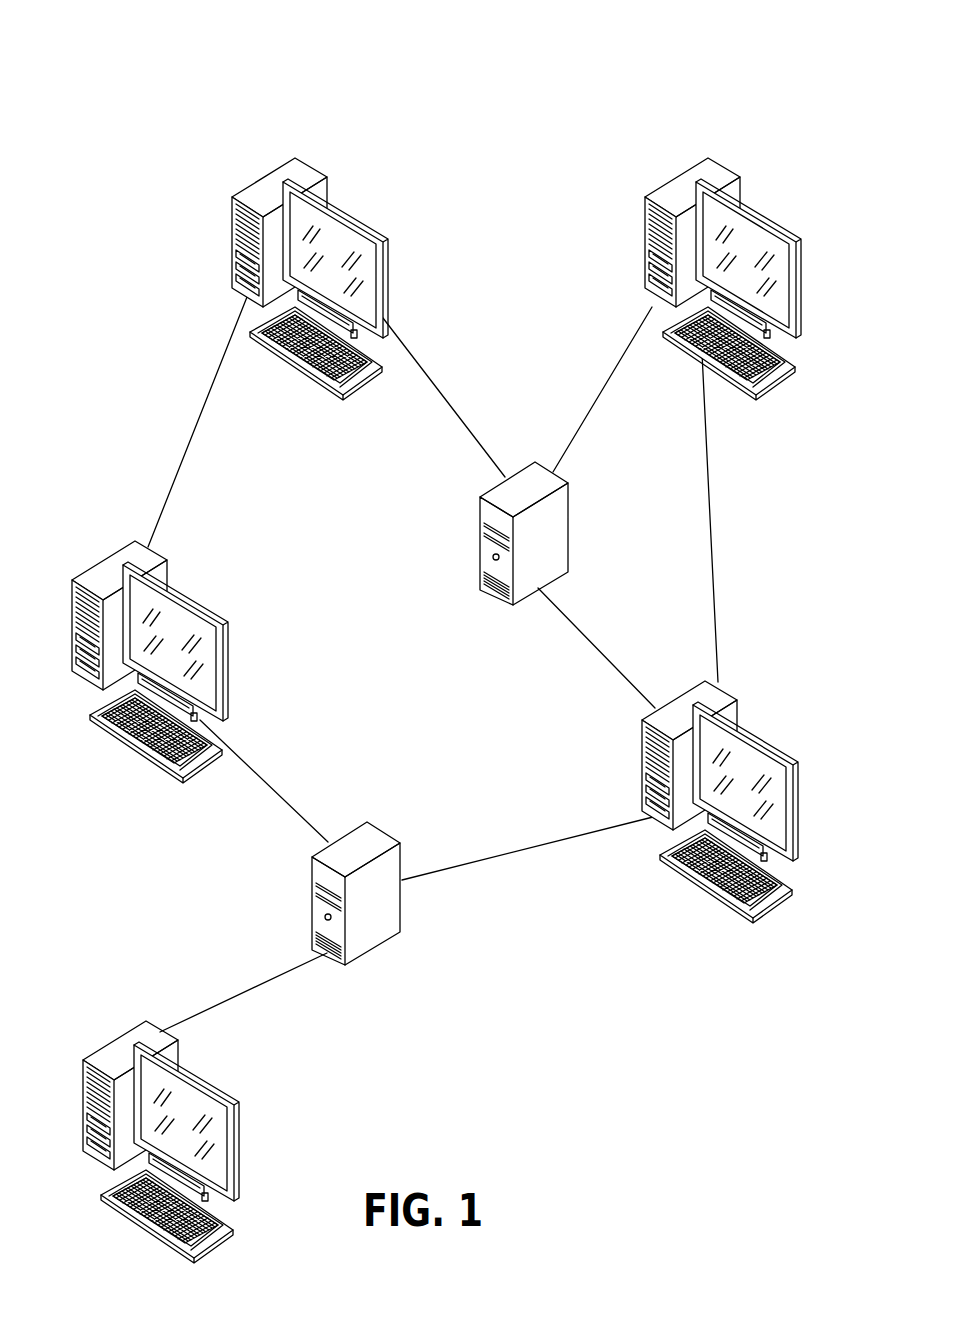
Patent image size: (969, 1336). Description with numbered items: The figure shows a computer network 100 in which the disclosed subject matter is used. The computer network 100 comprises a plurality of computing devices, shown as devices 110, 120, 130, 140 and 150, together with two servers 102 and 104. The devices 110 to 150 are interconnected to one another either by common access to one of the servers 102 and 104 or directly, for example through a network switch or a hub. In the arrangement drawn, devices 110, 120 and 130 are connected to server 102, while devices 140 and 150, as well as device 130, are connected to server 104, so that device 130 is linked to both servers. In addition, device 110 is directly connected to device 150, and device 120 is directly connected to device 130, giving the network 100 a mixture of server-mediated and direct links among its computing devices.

The computer network 100 is at (127, 55).
The server 102 is at (528, 463).
The server 104 is at (360, 820).
The device 110 is at (270, 168).
The device 120 is at (683, 170).
The device 130 is at (680, 690).
The device 140 is at (122, 1032).
The device 150 is at (110, 550).